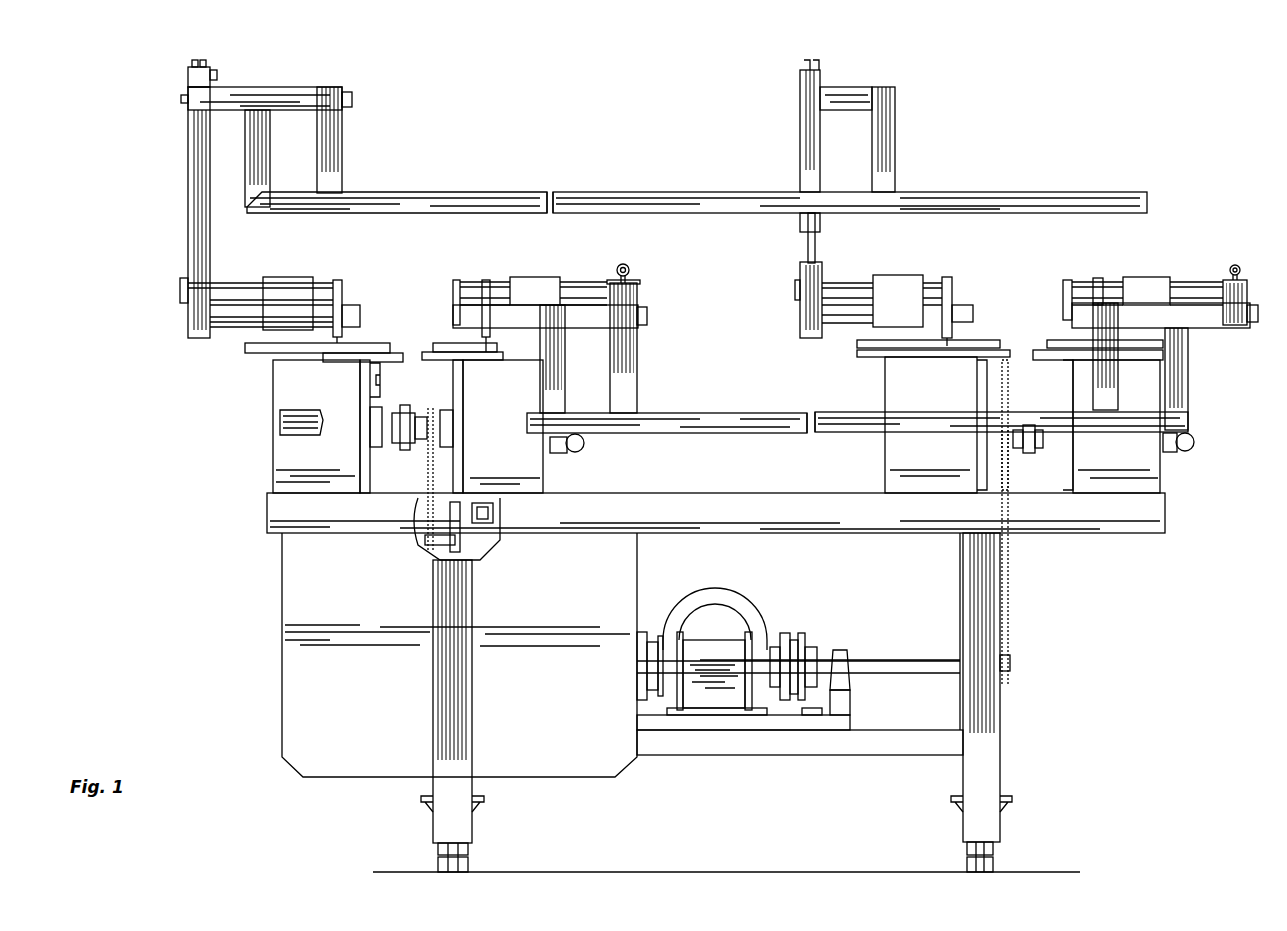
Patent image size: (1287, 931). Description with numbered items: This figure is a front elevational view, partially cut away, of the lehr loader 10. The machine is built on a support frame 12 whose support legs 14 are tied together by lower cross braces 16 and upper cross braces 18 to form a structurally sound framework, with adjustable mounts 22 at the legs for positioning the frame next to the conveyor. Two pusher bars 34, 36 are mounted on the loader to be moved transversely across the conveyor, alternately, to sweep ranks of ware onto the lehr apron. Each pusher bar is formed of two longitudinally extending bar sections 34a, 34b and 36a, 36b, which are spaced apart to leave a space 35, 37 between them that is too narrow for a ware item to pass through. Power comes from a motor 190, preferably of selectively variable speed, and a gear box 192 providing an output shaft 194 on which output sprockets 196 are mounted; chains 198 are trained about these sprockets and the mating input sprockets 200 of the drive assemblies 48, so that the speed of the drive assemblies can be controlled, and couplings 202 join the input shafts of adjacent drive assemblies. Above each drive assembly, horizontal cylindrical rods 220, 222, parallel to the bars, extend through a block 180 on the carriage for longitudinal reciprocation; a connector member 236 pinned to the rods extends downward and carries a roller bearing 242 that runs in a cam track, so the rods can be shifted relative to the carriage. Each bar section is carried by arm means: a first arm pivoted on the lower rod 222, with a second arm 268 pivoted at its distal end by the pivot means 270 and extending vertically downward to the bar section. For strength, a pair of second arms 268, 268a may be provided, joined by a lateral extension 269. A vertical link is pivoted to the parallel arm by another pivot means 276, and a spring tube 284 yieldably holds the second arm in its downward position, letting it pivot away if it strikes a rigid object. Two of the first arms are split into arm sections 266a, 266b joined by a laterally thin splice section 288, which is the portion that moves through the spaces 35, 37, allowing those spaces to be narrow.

The lehr loader 10 is at (1127, 162).
The support frame 12 is at (1170, 548).
The support legs 14 is at (440, 715).
The lower cross braces 16 is at (900, 742).
The upper cross braces 18 is at (853, 516).
The adjustable mounts 22 is at (483, 857).
The pusher bar 34 is at (1150, 205).
The bar section 34a is at (1002, 198).
The bar section 34b is at (503, 197).
The space 35 is at (553, 186).
The pusher bar 36 is at (1207, 430).
The bar section 36a is at (902, 422).
The bar section 36b is at (285, 420).
The space 37 is at (805, 443).
The drive assemblies 48 is at (292, 473).
The block 180 is at (289, 285).
The motor 190 is at (723, 588).
The gear box 192 is at (732, 622).
The output shaft 194 is at (884, 665).
The output sprockets 196 is at (1010, 660).
The chains 198 is at (430, 480).
The input sprockets 200 is at (437, 410).
The couplings 202 is at (396, 408).
The cylindrical rod 220 is at (238, 286).
The cylindrical rod 222 is at (240, 325).
The connector member 236 is at (337, 285).
The roller bearing 242 is at (343, 352).
The arm section 266a is at (805, 318).
The arm section 266b is at (800, 226).
The second arm 268 is at (345, 152).
The second arm 268a is at (256, 152).
The lateral extension 269 is at (302, 93).
The second arm pivot means 270 is at (185, 108).
The pivot means 276 is at (228, 73).
The spring tube 284 is at (628, 267).
The splice section 288 is at (815, 243).